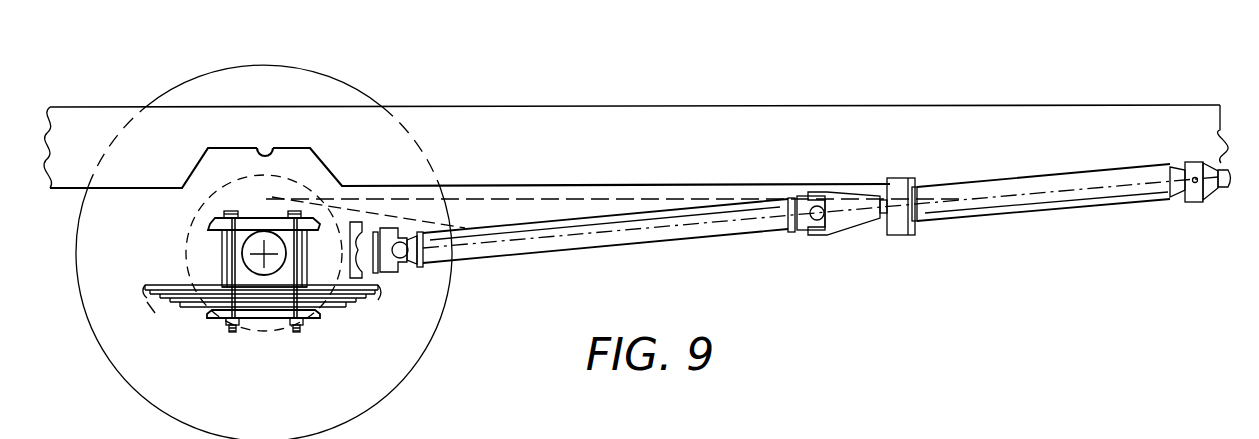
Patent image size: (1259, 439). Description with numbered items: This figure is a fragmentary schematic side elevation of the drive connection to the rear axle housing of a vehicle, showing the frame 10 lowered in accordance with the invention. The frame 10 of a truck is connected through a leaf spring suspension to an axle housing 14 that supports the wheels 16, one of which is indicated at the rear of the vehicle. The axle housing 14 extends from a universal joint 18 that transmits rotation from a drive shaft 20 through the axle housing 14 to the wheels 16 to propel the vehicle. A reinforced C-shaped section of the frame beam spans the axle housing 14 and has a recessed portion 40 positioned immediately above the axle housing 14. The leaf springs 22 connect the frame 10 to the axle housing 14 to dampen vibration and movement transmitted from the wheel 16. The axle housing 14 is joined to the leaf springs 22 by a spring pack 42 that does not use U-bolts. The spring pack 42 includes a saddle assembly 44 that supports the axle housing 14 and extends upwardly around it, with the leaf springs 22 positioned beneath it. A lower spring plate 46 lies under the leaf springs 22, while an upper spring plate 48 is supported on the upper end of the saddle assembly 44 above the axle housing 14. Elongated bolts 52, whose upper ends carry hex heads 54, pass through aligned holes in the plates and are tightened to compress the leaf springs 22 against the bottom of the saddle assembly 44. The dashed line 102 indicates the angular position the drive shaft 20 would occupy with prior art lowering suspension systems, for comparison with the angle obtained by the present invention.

The frame 10 is at (849, 78).
The axle housing 14 is at (243, 256).
The wheels 16 is at (312, 75).
The universal joint 18 is at (372, 273).
The drive shaft 20 is at (707, 238).
The leaf springs 22 is at (155, 283).
The recessed portion 40 is at (270, 157).
The spring pack 42 is at (203, 234).
The saddle assembly 44 is at (252, 280).
The lower spring plate 46 is at (214, 320).
The upper spring plate 48 is at (212, 217).
The bolts 52 is at (298, 267).
The hex heads 54 is at (230, 210).
The dashed line 102 is at (567, 199).